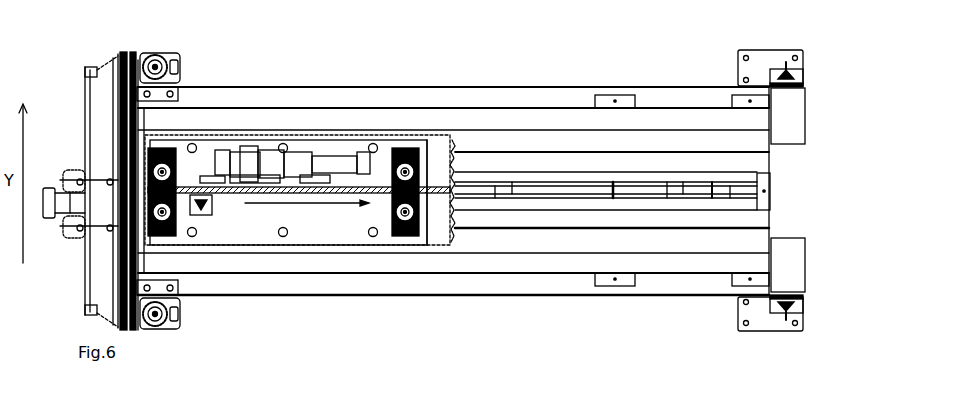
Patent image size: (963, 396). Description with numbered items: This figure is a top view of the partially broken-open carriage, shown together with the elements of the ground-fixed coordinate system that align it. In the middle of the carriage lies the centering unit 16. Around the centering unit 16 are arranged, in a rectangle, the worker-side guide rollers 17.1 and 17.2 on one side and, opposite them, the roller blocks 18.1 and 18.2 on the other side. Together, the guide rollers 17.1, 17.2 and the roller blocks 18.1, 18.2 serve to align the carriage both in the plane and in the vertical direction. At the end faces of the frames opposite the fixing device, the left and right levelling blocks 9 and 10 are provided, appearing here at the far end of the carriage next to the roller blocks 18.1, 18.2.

The centering unit 16 is at (288, 148).
The worker-side guide roller 17.1 is at (232, 42).
The worker-side guide roller 17.2 is at (232, 360).
The roller block 18.1 is at (785, 73).
The roller block 18.2 is at (785, 310).
The right levelling block 10 is at (786, 121).
The left levelling block 9 is at (797, 262).